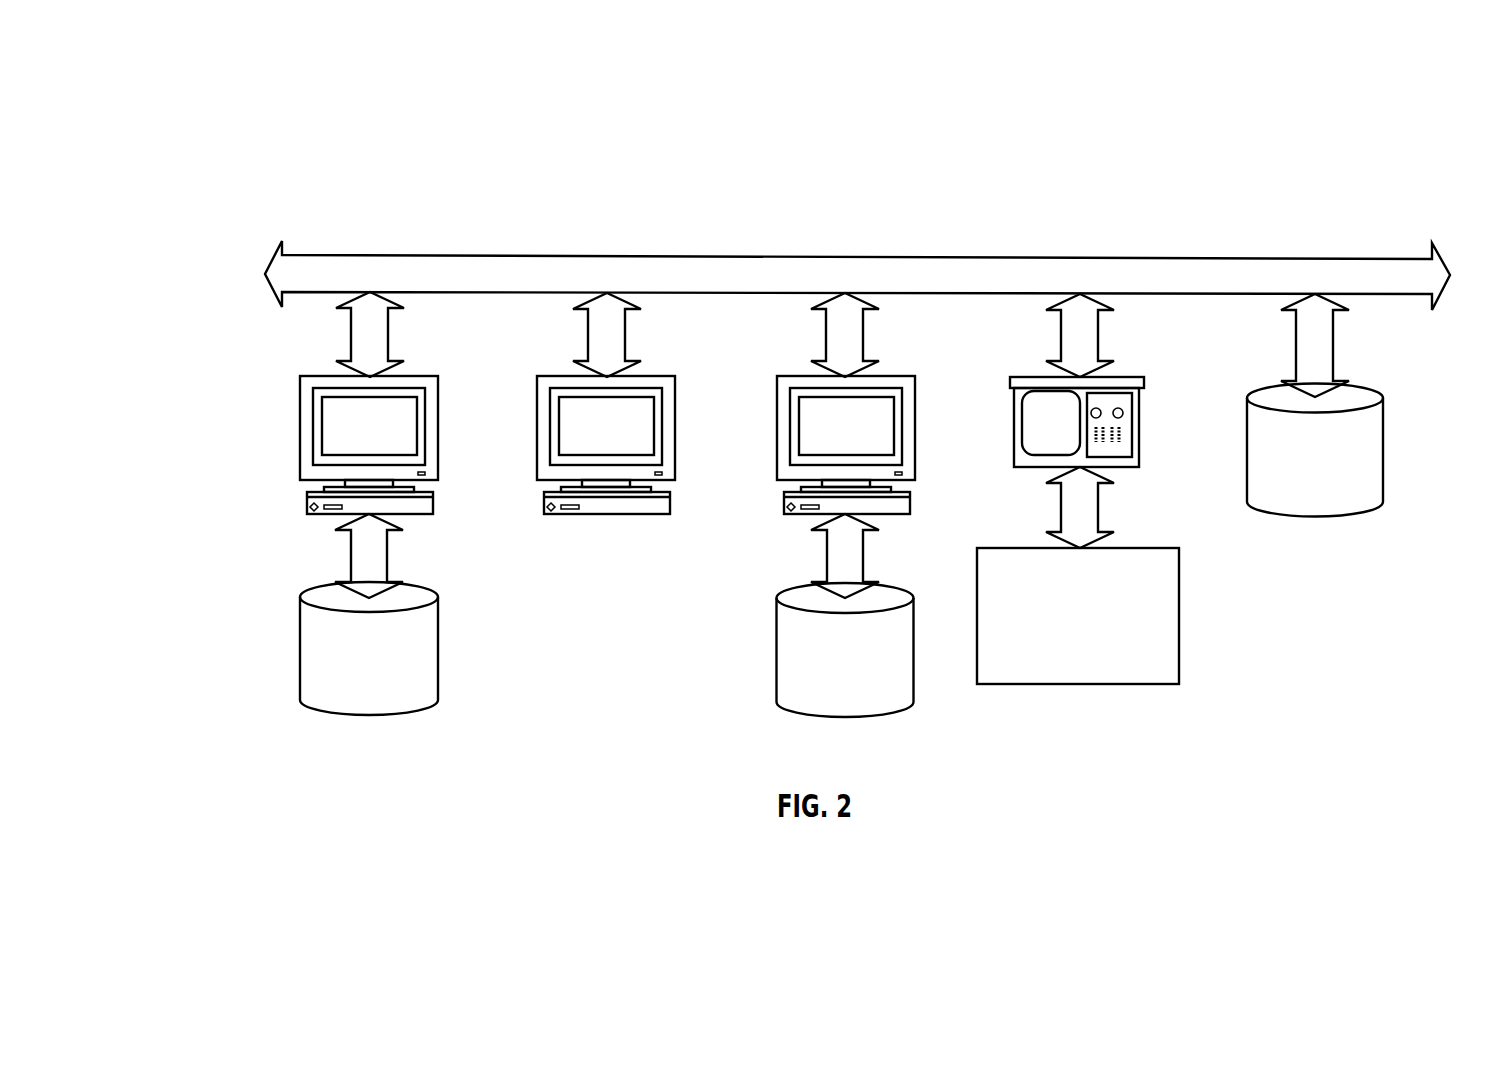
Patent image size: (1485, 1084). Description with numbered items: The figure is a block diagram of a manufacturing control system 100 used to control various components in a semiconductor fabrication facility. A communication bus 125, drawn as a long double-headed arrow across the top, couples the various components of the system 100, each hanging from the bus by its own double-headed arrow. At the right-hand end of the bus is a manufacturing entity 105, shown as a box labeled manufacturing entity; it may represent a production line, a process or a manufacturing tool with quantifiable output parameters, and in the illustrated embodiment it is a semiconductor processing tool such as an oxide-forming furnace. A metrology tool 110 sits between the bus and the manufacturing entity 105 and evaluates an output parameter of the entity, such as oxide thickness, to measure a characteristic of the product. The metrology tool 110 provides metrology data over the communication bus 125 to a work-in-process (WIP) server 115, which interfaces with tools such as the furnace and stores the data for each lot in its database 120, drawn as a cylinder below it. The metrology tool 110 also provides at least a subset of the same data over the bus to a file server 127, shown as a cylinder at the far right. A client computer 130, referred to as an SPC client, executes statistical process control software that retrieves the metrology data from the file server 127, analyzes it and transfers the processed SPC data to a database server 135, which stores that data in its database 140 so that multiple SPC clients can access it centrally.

The manufacturing control system 100 is at (226, 174).
The manufacturing entity 105 is at (1110, 684).
The metrology tool 110 is at (1139, 415).
The work-in-process (WIP) server 115 is at (777, 450).
The database 120 is at (776, 652).
The communication bus 125 is at (433, 255).
The file server 127 is at (1385, 450).
The client computer 130 is at (593, 514).
The database server 135 is at (300, 450).
The database 140 is at (299, 652).